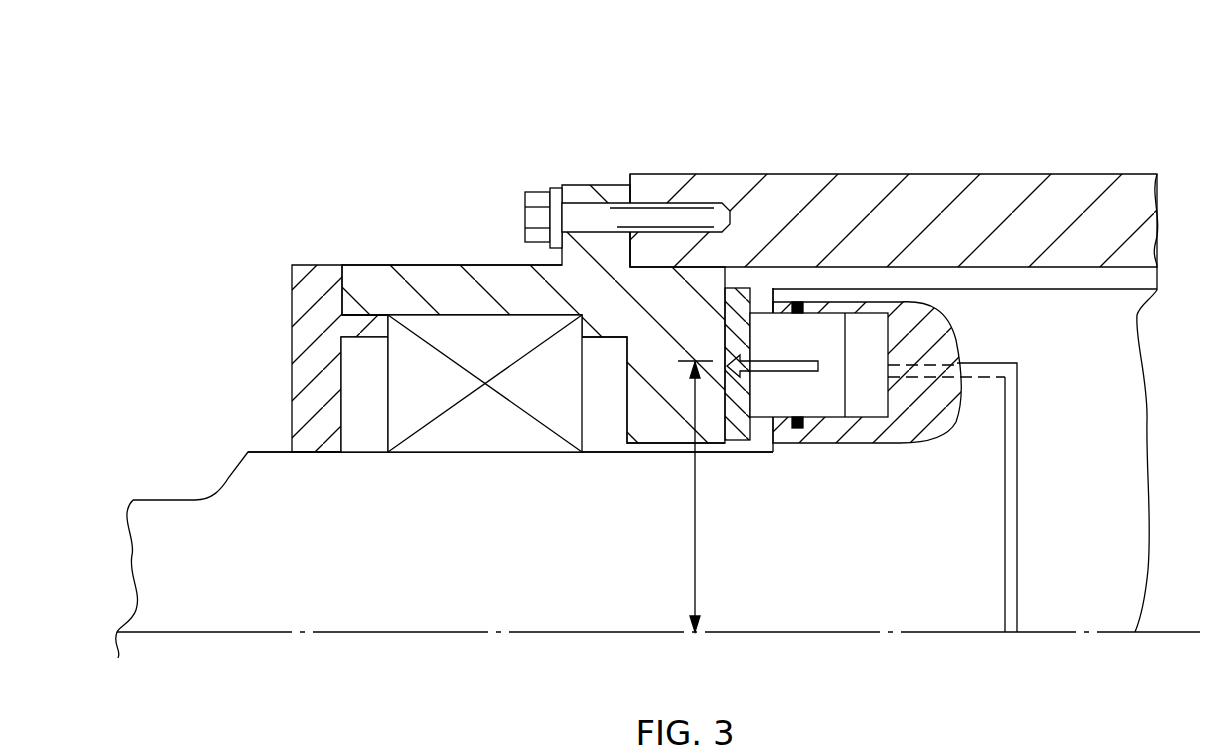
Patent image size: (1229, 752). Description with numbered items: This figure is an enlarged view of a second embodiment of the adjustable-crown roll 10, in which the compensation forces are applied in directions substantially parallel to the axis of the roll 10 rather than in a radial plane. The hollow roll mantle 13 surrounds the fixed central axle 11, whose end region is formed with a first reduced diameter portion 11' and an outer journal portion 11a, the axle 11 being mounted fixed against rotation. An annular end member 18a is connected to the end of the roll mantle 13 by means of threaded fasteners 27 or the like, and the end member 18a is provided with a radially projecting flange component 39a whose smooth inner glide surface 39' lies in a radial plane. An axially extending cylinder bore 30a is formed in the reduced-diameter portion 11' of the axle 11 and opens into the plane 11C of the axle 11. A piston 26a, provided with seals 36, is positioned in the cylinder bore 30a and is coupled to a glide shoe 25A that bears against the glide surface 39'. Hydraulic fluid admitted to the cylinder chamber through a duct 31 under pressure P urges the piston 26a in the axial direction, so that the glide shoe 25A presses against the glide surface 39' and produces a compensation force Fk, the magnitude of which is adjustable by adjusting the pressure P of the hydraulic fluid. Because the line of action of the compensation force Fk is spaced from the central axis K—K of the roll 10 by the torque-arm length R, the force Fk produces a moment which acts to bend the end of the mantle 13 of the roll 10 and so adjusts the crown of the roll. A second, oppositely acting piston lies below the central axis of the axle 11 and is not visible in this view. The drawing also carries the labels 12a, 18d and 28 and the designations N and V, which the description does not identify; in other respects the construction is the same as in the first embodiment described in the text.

The adjustable-crown roll 10 is at (986, 207).
The fixed central axle 11 is at (609, 564).
The outer journal portion 11a is at (242, 617).
The first reduced diameter portion 11' is at (510, 563).
The plane of the axle 11C is at (772, 300).
The magnet coil 12a is at (398, 395).
The hollow roll mantle 13 is at (847, 198).
The annular end member 18a is at (605, 190).
The magnet housing portion 18d is at (385, 282).
The glide shoe 25A is at (735, 285).
The piston 26a is at (827, 327).
The threaded fastener 27 is at (538, 193).
The ring 28 is at (303, 370).
The cylinder bore 30a is at (872, 398).
The duct 31 is at (1018, 380).
The seal 36 is at (803, 423).
The radially projecting flange component 39a is at (710, 423).
The smooth inner glide surface 39' is at (771, 466).
The compensation force Fk is at (808, 372).
The central axis K is at (653, 633).
The hub direction N is at (689, 173).
The pressure of hydraulic fluid P is at (873, 337).
The length of the torque arm R is at (691, 511).
The vehicle wheel V is at (1078, 282).